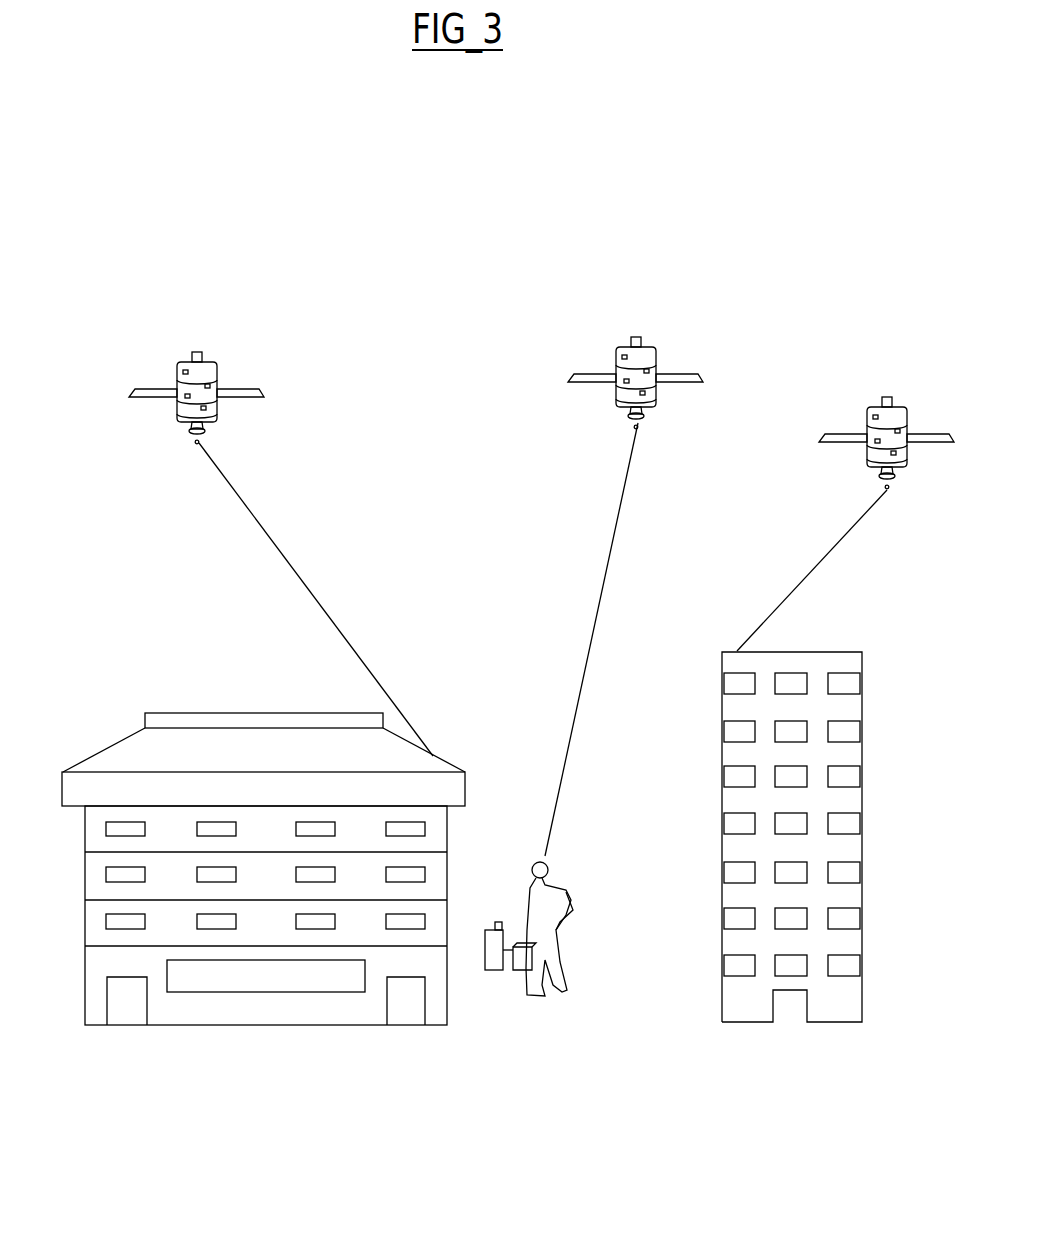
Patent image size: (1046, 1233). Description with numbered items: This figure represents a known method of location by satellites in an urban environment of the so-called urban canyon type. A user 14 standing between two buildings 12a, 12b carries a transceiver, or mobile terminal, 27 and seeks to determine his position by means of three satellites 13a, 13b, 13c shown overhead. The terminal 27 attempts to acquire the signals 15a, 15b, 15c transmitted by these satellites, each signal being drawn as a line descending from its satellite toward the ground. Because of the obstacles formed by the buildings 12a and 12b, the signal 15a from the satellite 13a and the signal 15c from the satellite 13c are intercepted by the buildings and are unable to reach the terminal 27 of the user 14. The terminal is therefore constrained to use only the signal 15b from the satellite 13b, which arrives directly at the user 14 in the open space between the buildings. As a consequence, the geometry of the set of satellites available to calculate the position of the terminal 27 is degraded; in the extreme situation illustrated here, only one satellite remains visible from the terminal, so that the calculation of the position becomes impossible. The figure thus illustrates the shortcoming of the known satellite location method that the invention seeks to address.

The building 12a is at (272, 982).
The building 12b is at (770, 1000).
The satellite 13a is at (197, 352).
The satellite 13b is at (636, 337).
The satellite 13c is at (887, 397).
The user 14 is at (521, 975).
The signal 15a is at (277, 548).
The signal 15b is at (612, 548).
The signal 15c is at (820, 560).
The transceiver (mobile terminal) 27 is at (493, 922).